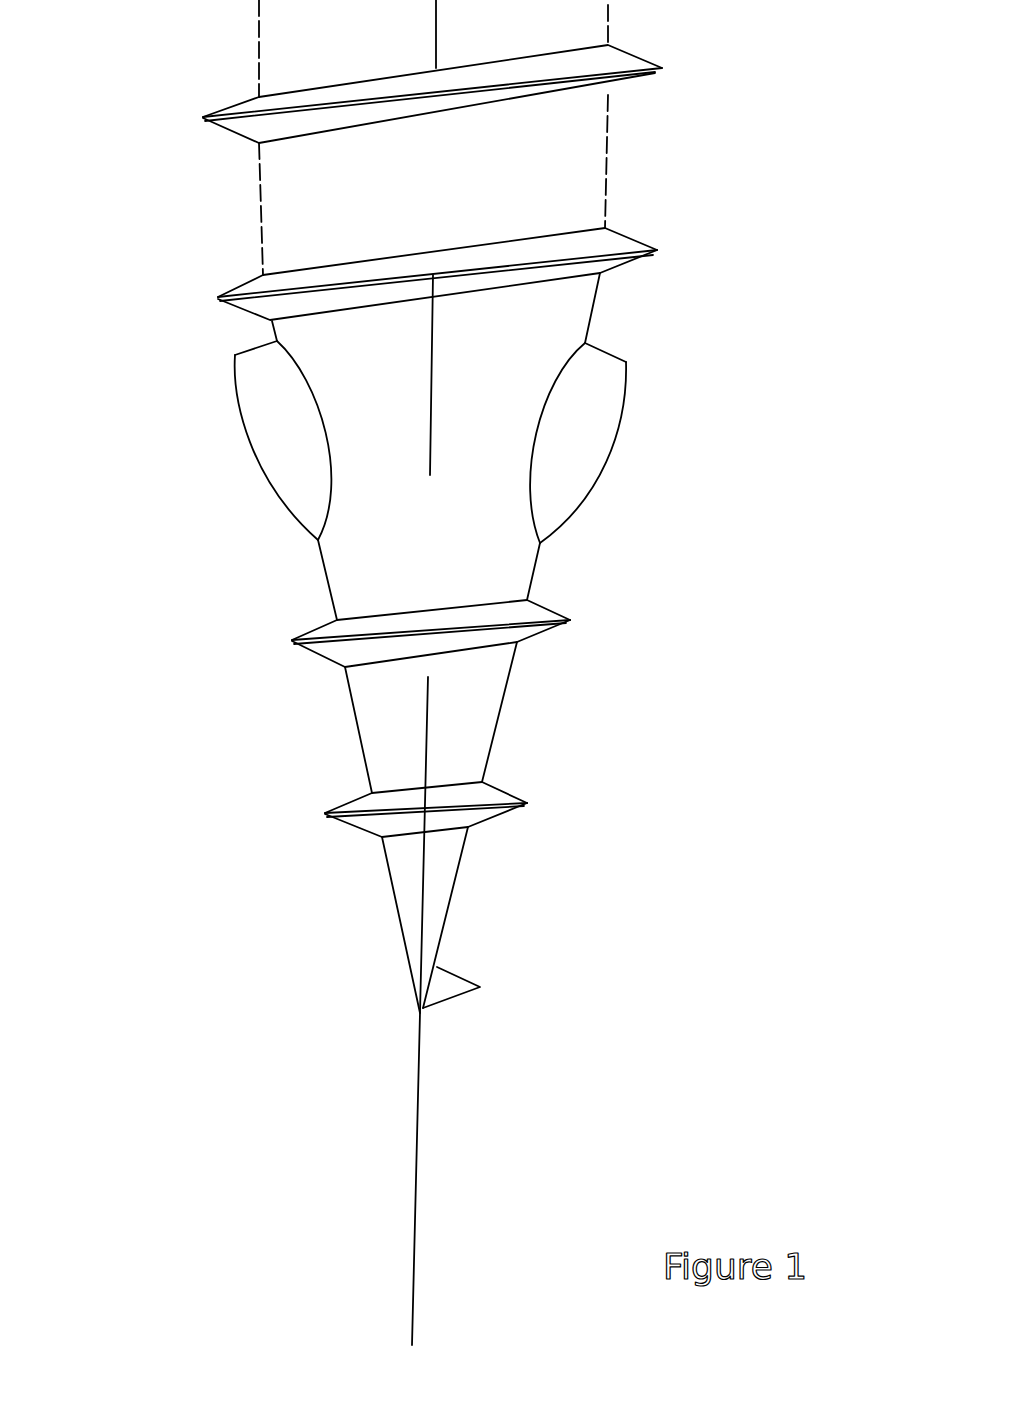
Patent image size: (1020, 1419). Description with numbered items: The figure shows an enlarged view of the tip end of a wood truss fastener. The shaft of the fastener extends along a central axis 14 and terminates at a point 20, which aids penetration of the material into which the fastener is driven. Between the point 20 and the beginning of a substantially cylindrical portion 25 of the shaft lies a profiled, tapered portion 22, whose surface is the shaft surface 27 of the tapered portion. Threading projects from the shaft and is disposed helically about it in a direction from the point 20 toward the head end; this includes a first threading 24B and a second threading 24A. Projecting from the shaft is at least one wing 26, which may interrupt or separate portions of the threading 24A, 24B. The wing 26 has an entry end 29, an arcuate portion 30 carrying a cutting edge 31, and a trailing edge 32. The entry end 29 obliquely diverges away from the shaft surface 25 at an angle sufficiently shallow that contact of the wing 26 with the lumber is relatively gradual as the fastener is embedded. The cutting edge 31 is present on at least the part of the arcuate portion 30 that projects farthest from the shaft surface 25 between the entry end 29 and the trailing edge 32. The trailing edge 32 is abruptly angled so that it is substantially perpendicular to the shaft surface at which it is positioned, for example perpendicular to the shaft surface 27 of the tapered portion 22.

The central axis 14 is at (420, 1120).
The point 20 is at (422, 1018).
The tapered portion 22 is at (510, 675).
The second threading 24A is at (293, 647).
The first threading 24B is at (203, 120).
The substantially cylindrical portion 25 is at (607, 168).
The wing 26 is at (258, 468).
The shaft surface of the tapered portion 27 is at (600, 310).
The entry end 29 is at (540, 542).
The arcuate portion 30 is at (638, 468).
The cutting edge 31 is at (618, 432).
The trailing edge 32 is at (627, 362).